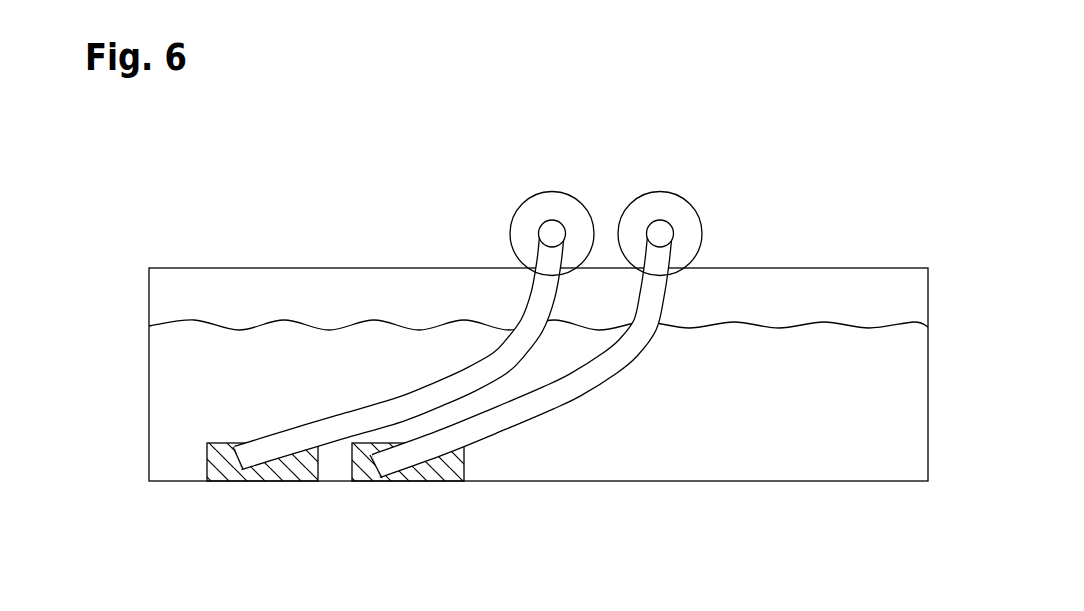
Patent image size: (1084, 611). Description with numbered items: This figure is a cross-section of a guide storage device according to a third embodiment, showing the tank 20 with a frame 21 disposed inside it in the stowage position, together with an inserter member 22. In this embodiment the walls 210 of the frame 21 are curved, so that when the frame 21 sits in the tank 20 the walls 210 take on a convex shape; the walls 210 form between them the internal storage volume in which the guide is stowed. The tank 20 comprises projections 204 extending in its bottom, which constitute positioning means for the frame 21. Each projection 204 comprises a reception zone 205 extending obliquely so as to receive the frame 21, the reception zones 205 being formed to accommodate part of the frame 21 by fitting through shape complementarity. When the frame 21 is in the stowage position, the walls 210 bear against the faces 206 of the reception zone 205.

The tank 20 is at (109, 461).
The frame 21 is at (617, 409).
The inserter member 22 is at (579, 170).
The projections 204 is at (268, 470).
The reception zone 205 is at (236, 462).
The faces 206 is at (412, 478).
The walls 210 is at (420, 385).